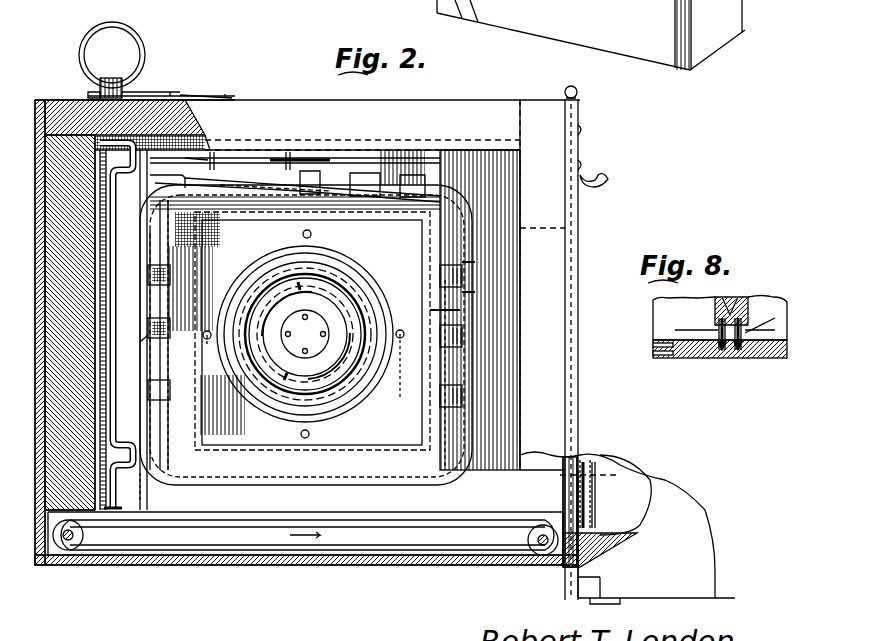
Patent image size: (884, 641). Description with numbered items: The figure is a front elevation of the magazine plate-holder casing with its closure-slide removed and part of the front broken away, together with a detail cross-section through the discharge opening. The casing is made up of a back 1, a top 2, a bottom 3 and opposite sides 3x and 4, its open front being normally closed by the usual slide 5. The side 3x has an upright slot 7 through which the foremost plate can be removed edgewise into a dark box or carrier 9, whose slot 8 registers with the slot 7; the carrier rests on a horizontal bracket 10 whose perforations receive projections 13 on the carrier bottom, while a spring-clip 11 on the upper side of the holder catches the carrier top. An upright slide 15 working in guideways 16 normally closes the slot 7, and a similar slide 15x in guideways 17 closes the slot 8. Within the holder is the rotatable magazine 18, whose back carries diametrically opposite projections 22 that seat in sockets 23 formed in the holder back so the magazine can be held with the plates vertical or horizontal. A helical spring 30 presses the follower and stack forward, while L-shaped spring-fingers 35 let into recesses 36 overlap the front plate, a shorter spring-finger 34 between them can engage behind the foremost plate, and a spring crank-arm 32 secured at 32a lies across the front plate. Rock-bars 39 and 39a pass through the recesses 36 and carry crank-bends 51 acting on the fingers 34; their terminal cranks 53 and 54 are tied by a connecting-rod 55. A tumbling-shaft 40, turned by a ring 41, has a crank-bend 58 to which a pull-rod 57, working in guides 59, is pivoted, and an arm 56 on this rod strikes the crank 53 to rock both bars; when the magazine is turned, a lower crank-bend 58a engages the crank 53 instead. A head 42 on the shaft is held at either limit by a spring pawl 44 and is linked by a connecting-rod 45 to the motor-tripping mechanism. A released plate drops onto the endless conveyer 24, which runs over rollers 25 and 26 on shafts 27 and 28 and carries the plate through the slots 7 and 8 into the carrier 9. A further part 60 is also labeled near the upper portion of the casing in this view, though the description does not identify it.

In FIG. 2, the back 1 is at (425, 170).
In FIG. 2, the top 2 is at (185, 96).
In FIG. 2, the bottom 3 is at (135, 560).
In FIG. 8, the bottom 3 is at (665, 316).
In FIG. 2, the side 3x is at (552, 382).
In FIG. 8, the side 3x is at (722, 300).
In FIG. 2, the side 4 is at (300, 100).
In FIG. 8, the slide 5 is at (658, 356).
In FIG. 2, the upright slot 7 is at (578, 527).
In FIG. 8, the upright slot 7 is at (718, 330).
In FIG. 2, the slot 8 is at (552, 512).
In FIG. 8, the slot 8 is at (745, 336).
In FIG. 8, the dark box or carrier 9 is at (768, 310).
In FIG. 2, the bracket 10 is at (462, 22).
In FIG. 2, the spring-clip 11 is at (598, 175).
In FIG. 2, the projections 13 is at (485, 24).
In FIG. 2, the upright slide 15 is at (576, 475).
In FIG. 8, the upright slide 15 is at (720, 352).
In FIG. 2, the slide 15x is at (588, 458).
In FIG. 8, the slide 15x is at (740, 352).
In FIG. 2, the guideways 16 is at (585, 492).
In FIG. 8, the guideways 16 is at (730, 305).
In FIG. 2, the guideways 17 is at (596, 515).
In FIG. 8, the guideways 17 is at (748, 315).
In FIG. 2, the magazine 18 is at (358, 253).
In FIG. 2, the projections 22 is at (302, 338).
In FIG. 2, the seats or sockets 23 is at (312, 234).
In FIG. 2, the endless conveyer 24 is at (178, 530).
In FIG. 2, the roller 25 is at (66, 545).
In FIG. 2, the roller 26 is at (540, 550).
In FIG. 2, the shaft 27 is at (72, 540).
In FIG. 2, the shaft 28 is at (528, 540).
In FIG. 2, the helical spring 30 is at (360, 408).
In FIG. 2, the spring crank-arm 32 is at (348, 420).
In FIG. 2, the securing point of spring crank-arm 32a is at (475, 292).
In FIG. 2, the spring-finger 34 is at (170, 325).
In FIG. 2, the L-shaped spring-fingers 35 is at (170, 274).
In FIG. 2, the recesses 36 is at (148, 284).
In FIG. 2, the rock-bar 39 is at (160, 240).
In FIG. 2, the rock-bar 39a is at (455, 365).
In FIG. 2, the tumbling-shaft 40 is at (150, 248).
In FIG. 2, the ring 41 is at (126, 45).
In FIG. 2, the head or plate 42 is at (86, 94).
In FIG. 2, the spring dog or pawl 44 is at (160, 94).
In FIG. 2, the connecting-rod 45 is at (96, 85).
In FIG. 2, the crank-bend 51 is at (148, 336).
In FIG. 2, the terminal crank 53 is at (162, 329).
In FIG. 2, the terminal crank 54 is at (452, 215).
In FIG. 2, the connecting-rod 55 is at (280, 200).
In FIG. 2, the arm or projection 56 is at (213, 152).
In FIG. 2, the pull-rod 57 is at (318, 160).
In FIG. 2, the crank-bend 58 is at (150, 183).
In FIG. 2, the crank-bend 58a is at (140, 478).
In FIG. 2, the guides 59 is at (285, 158).
In FIG. 2, the opening 60 is at (208, 133).